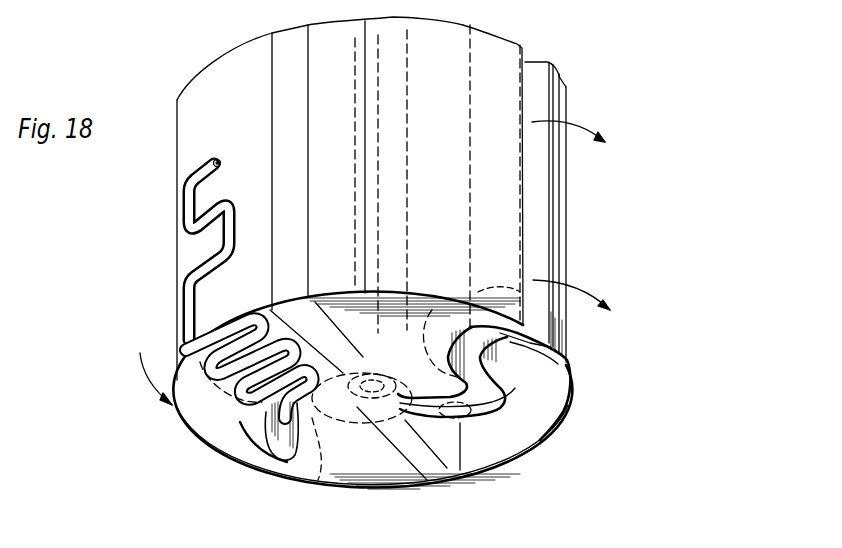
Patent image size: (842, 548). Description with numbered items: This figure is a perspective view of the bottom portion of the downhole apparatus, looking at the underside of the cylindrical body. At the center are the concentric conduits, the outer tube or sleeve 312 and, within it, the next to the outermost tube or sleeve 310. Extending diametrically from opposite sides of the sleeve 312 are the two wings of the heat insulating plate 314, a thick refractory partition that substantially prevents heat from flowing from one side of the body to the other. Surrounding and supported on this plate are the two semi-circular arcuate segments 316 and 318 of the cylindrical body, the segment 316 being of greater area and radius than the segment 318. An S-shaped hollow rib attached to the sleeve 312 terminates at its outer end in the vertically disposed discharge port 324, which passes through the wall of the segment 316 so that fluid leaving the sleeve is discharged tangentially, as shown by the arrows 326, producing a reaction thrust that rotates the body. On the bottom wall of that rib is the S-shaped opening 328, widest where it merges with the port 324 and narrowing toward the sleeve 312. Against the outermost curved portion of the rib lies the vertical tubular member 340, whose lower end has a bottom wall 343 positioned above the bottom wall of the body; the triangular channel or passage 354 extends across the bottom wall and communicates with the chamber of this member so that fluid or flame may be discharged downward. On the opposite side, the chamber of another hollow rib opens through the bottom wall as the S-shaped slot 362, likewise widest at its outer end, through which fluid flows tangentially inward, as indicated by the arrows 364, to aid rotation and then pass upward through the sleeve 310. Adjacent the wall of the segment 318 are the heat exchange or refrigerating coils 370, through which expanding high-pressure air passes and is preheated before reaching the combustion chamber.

The next to the outermost tube or sleeve 310 is at (345, 386).
The outer tube or sleeve 312 is at (344, 385).
The heat insulating plate 314 is at (295, 135).
The arcuate segment 316 is at (495, 45).
The arcuate segment 318 is at (187, 157).
The discharge port 324 is at (542, 227).
The arrows 326 is at (578, 278).
The S-shaped opening 328 is at (483, 382).
The vertical tubular member 340 is at (473, 333).
The bottom wall 343 is at (497, 290).
The channel or passage 354 is at (490, 417).
The S-shaped slot 362 is at (242, 447).
The arrows 364 is at (145, 375).
The heat exchange or refrigerating coils 370 is at (202, 219).